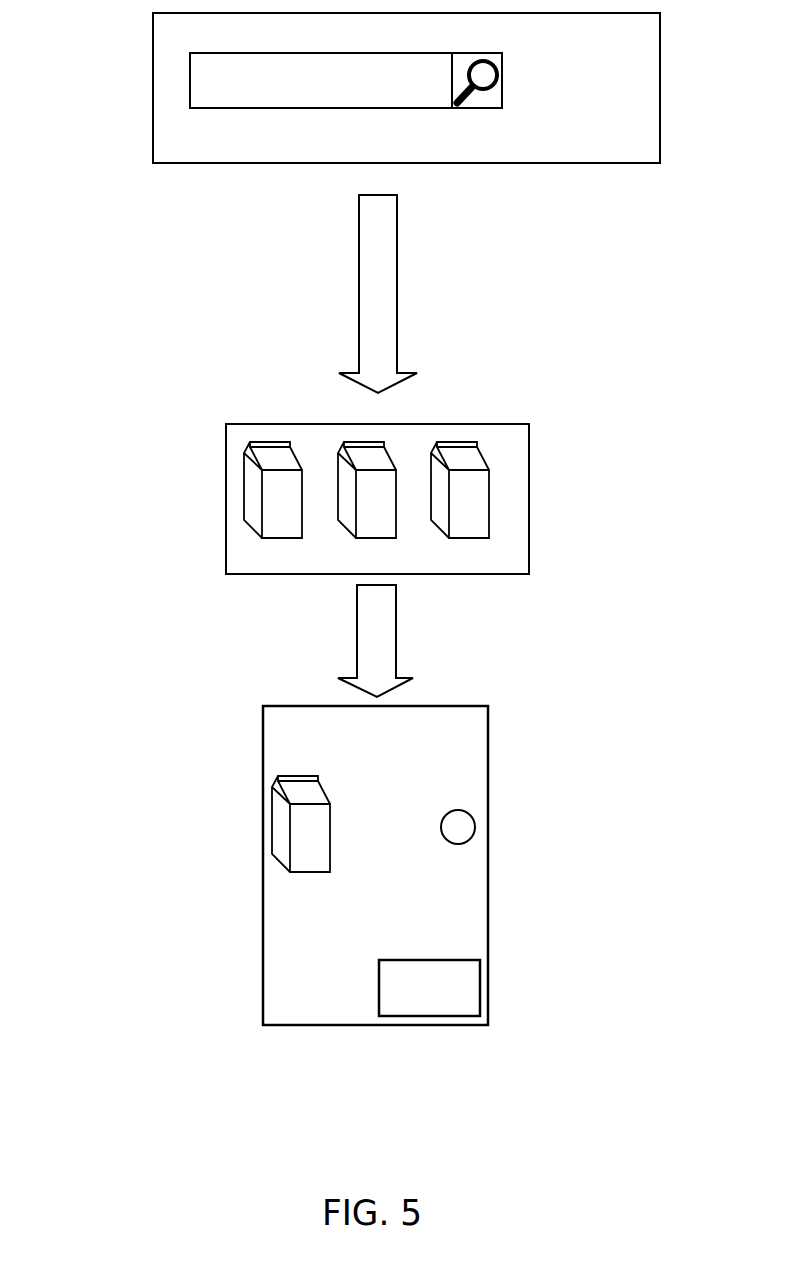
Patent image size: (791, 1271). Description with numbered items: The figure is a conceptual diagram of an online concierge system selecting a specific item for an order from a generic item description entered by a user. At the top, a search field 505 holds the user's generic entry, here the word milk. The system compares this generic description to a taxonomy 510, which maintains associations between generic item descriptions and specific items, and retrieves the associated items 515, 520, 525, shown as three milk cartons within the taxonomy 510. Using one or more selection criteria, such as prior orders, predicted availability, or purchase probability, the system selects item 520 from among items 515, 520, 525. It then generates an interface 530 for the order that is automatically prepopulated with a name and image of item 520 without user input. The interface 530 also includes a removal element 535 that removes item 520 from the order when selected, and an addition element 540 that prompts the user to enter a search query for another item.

The search bar 505 is at (200, 80).
The taxonomy 510 is at (529, 497).
The item 515 is at (262, 504).
The item 520 is at (355, 505).
The item 525 is at (470, 471).
The interface 530 is at (488, 865).
The removal element 535 is at (458, 808).
The addition element 540 is at (488, 987).